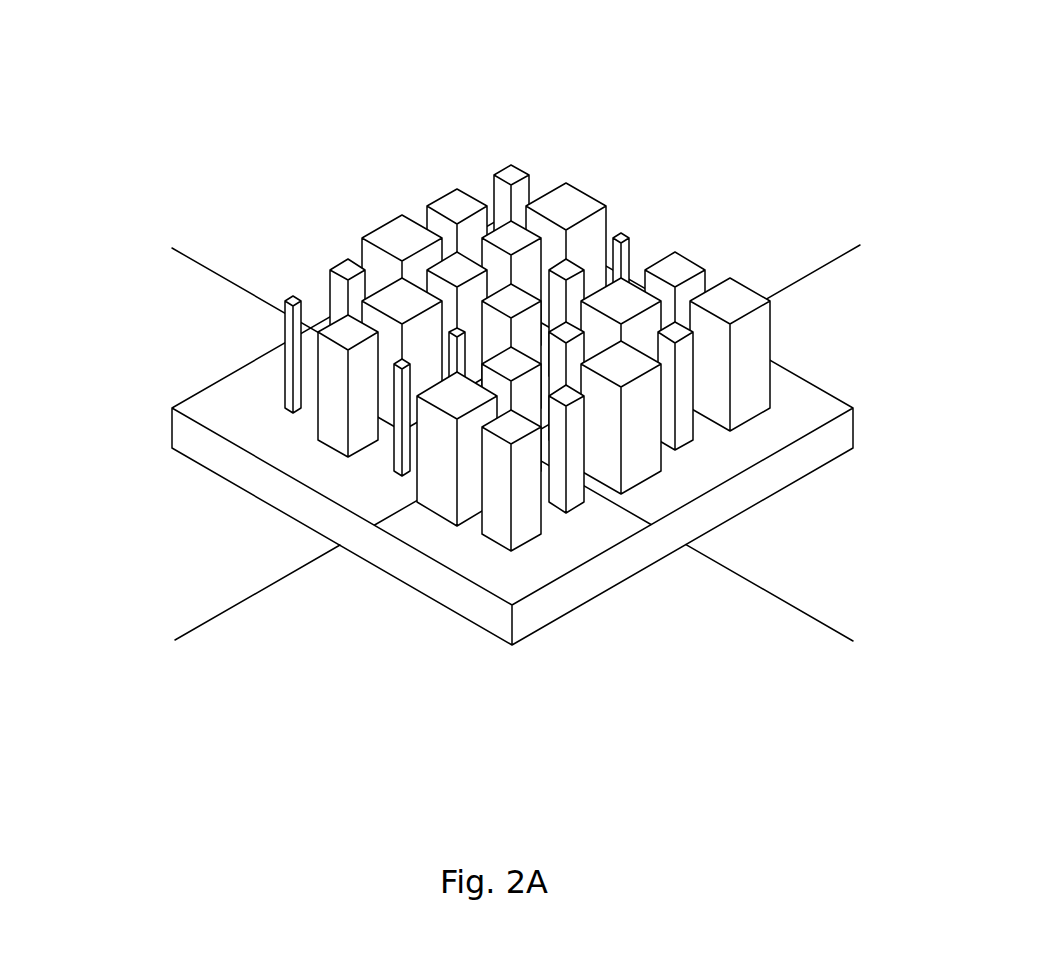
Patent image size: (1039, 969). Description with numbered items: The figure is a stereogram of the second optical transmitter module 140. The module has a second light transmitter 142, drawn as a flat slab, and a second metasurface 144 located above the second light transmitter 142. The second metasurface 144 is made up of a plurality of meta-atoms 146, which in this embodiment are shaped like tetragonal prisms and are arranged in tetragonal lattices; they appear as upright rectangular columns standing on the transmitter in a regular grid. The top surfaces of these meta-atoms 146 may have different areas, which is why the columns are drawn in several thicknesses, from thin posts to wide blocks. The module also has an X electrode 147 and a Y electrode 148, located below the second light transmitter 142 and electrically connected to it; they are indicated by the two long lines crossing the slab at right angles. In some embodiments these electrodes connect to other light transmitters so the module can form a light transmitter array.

The second optical transmitter module 140 is at (531, 360).
The second light transmitter 142 is at (171, 437).
The second metasurface 144 is at (487, 401).
The meta-atoms 146 is at (394, 471).
The X electrode 147 is at (830, 263).
The Y electrode 148 is at (812, 620).